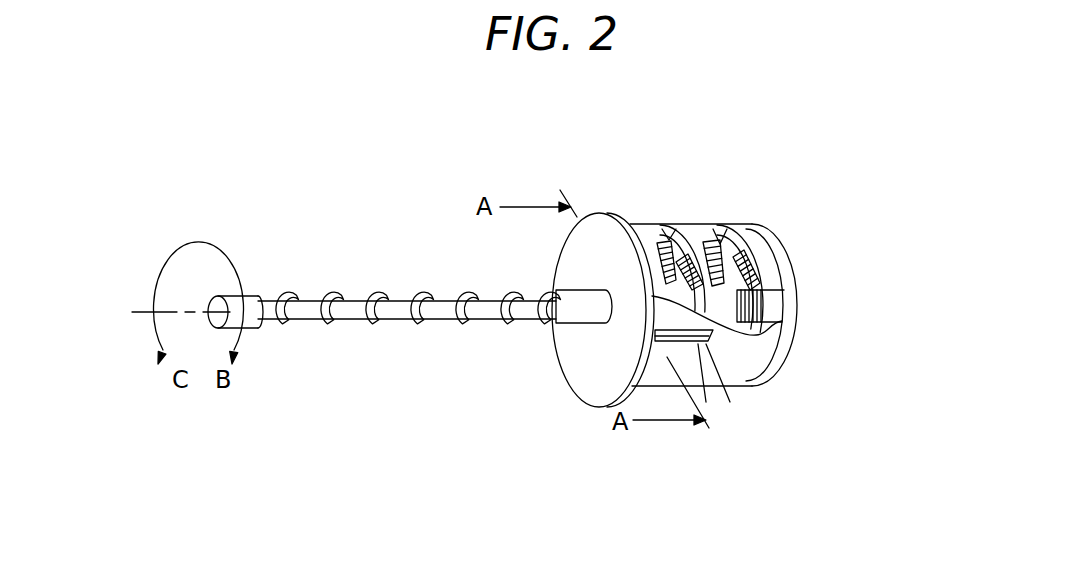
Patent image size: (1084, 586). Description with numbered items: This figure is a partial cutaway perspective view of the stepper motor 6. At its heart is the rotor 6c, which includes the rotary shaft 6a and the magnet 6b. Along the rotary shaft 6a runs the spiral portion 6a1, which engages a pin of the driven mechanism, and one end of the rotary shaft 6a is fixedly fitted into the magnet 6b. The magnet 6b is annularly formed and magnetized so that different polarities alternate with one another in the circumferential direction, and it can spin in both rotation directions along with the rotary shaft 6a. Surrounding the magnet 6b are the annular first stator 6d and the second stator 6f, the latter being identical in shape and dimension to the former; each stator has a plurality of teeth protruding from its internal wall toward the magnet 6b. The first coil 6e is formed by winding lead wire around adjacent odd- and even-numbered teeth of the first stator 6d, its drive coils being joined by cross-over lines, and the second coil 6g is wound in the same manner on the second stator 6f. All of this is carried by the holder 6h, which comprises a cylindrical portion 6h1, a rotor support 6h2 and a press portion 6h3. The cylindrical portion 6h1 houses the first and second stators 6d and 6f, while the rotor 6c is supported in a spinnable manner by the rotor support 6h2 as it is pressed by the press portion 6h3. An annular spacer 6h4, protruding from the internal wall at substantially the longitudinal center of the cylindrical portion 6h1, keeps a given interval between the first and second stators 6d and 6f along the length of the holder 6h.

The stepper motor 6 is at (545, 457).
The rotary shaft 6a is at (556, 322).
The spiral portion 6a1 is at (372, 327).
The magnet 6b is at (725, 298).
The rotor 6c is at (442, 377).
The first stator 6d is at (672, 230).
The first coil 6e is at (652, 232).
The second stator 6f is at (772, 265).
The second coil 6g is at (745, 230).
The holder 6h is at (783, 370).
The cylindrical portion 6h1 is at (747, 372).
The rotor support 6h2 is at (599, 233).
The press portion 6h3 is at (795, 333).
The spacer 6h4 is at (714, 228).